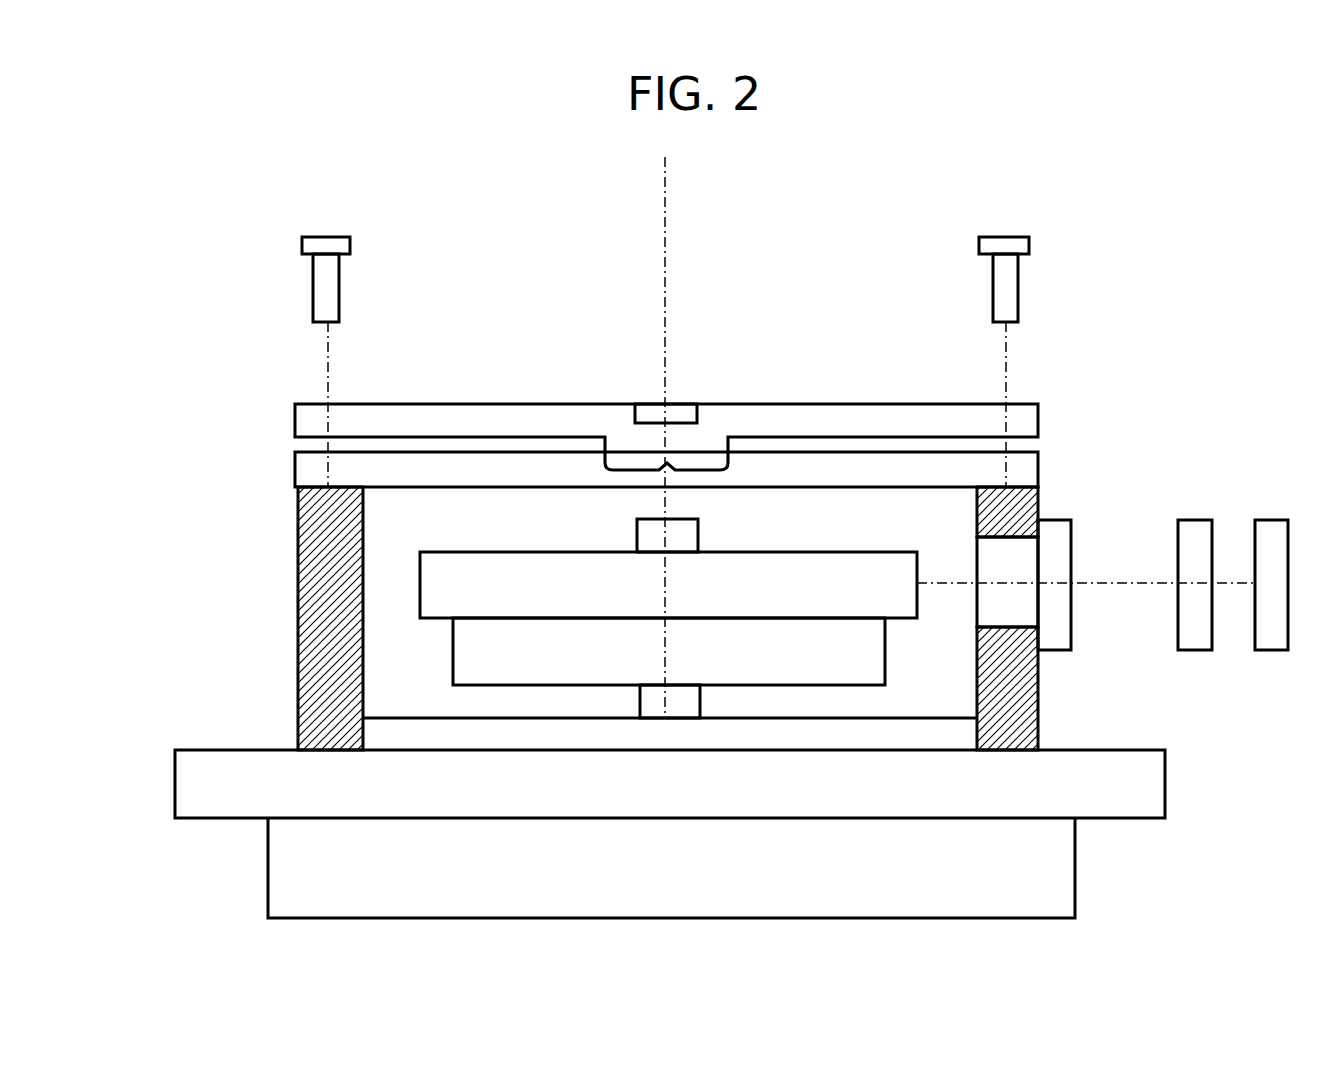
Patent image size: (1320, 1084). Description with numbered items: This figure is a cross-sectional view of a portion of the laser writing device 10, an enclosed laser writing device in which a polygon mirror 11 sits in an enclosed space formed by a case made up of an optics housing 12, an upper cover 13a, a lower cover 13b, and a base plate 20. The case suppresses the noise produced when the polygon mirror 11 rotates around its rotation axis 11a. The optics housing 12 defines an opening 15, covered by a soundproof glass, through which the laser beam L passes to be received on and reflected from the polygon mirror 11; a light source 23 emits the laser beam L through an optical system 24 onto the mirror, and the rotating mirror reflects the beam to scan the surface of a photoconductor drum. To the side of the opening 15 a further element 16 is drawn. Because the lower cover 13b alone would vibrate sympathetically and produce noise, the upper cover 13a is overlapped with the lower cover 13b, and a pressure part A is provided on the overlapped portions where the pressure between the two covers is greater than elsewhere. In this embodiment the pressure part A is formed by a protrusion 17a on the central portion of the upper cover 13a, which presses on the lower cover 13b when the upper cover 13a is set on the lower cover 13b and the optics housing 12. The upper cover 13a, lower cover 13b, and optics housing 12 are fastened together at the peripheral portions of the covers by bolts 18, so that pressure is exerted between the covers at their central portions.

The laser writing device 10 is at (1052, 435).
The polygon mirror 11 is at (820, 561).
The rotation axis 11a is at (665, 203).
The optics housing 12 is at (302, 683).
The upper cover 13a is at (540, 416).
The lower cover 13b is at (552, 472).
The opening 15 is at (990, 605).
The light source / optical element 16 is at (1057, 546).
The protrusion 17a is at (676, 441).
The bolt 18 is at (329, 283).
The base plate 20 is at (187, 790).
The light source 23 is at (1275, 636).
The optical system 24 is at (1198, 636).
The pressure part A is at (665, 472).
The laser beam L is at (1140, 585).